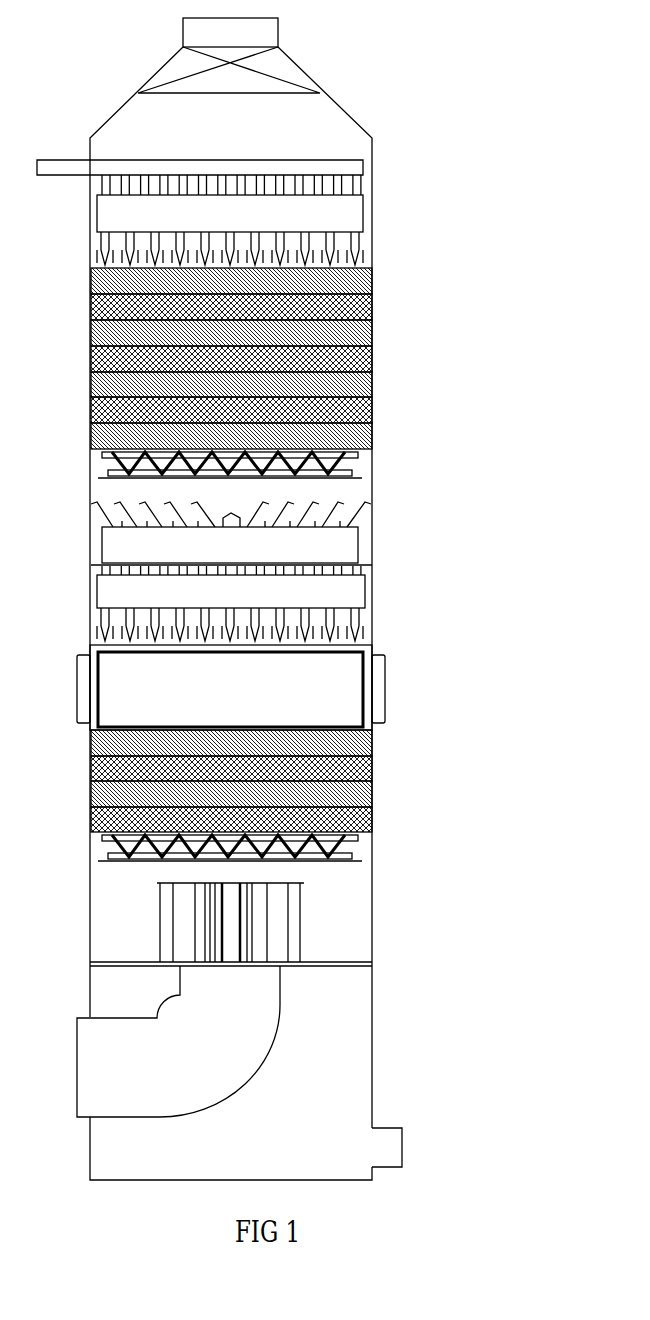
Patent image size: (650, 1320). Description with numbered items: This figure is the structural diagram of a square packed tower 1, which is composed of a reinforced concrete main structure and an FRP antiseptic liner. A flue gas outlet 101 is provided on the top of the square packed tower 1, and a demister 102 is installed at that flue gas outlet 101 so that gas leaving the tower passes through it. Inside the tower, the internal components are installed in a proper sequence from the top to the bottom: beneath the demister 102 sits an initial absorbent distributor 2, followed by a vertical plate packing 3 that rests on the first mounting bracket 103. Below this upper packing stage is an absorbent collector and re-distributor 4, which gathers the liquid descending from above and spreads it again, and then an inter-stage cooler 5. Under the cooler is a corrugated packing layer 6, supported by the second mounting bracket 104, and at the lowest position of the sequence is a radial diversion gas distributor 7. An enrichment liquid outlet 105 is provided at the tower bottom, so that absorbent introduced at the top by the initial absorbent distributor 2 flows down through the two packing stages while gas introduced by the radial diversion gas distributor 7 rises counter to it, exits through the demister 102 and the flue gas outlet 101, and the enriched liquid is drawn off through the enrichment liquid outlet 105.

The square packed tower 1 is at (325, 143).
The flue gas outlet 101 is at (247, 30).
The demister 102 is at (275, 68).
The initial absorbent distributor 2 is at (340, 212).
The vertical plate packing 3 is at (347, 360).
The first mounting bracket 103 is at (347, 455).
The absorbent collector and re-distributor 4 is at (317, 590).
The inter-stage cooler 5 is at (338, 700).
The corrugated packing layer 6 is at (342, 792).
The second mounting bracket 104 is at (350, 837).
The radial diversion gas distributor 7 is at (262, 1005).
The enrichment liquid outlet 105 is at (377, 1142).